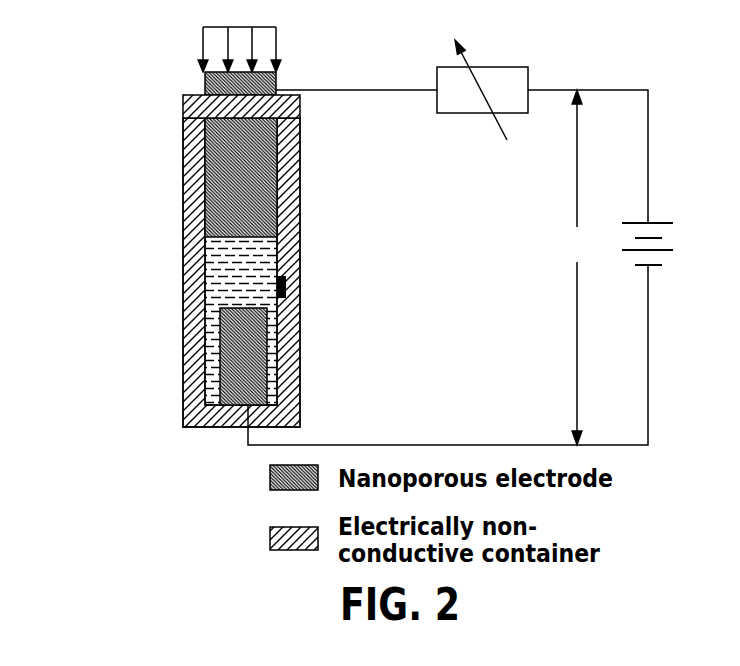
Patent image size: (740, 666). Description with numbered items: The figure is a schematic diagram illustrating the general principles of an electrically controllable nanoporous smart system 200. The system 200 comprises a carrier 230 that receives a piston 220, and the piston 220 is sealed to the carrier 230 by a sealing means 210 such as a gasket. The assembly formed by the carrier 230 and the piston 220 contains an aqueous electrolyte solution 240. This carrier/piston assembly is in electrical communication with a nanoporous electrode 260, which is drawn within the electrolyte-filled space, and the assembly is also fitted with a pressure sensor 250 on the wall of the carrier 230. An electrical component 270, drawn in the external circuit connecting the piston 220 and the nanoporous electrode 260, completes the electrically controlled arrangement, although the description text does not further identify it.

The system 200 is at (345, 223).
The sealing means 210 is at (183, 105).
The piston 220 is at (220, 190).
The carrier 230 is at (188, 272).
The aqueous electrolyte solution 240 is at (230, 288).
The pressure sensor 250 is at (287, 290).
The nanoporous electrode 260 is at (230, 387).
The variable resistor 270 is at (507, 83).